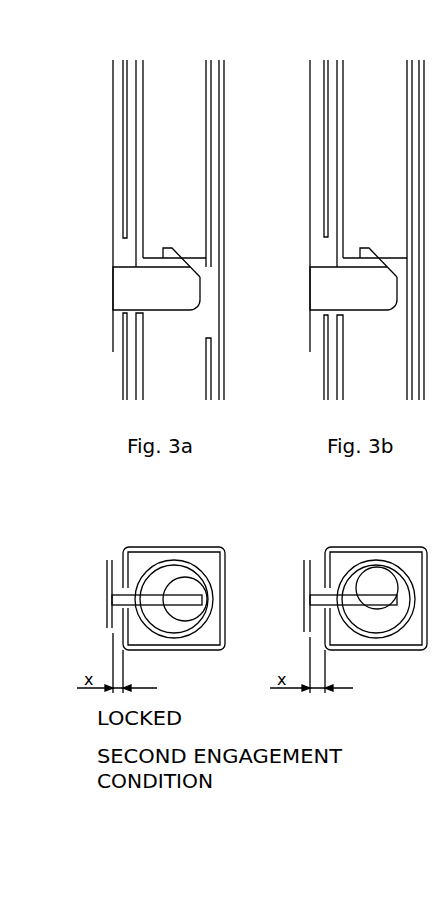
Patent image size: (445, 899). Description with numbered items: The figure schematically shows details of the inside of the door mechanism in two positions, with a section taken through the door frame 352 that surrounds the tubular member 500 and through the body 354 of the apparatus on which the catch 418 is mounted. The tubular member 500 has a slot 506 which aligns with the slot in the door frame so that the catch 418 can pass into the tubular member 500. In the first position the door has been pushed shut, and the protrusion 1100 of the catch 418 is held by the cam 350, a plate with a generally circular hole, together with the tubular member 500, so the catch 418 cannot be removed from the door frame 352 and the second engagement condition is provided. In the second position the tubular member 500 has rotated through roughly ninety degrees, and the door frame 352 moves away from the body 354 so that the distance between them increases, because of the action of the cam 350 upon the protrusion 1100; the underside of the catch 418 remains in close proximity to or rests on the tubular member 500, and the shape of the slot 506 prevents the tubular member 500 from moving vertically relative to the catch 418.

In FIG. 3A, the cam 350 is at (152, 582).
In FIG. 3B, the cam 350 is at (376, 599).
In FIG. 3A, the door frame 352 is at (123, 70).
In FIG. 3B, the door frame 352 is at (368, 355).
In FIG. 3A, the body 354 is at (76, 156).
In FIG. 3B, the body 354 is at (305, 560).
In FIG. 3A, the catch 418 is at (170, 298).
In FIG. 3B, the catch 418 is at (361, 298).
In FIG. 3A, the tubular member 500 is at (143, 74).
In FIG. 3B, the tubular member 500 is at (354, 588).
In FIG. 3A, the slot 506 is at (123, 203).
In FIG. 3B, the slot 506 is at (327, 237).
In FIG. 3A, the protrusion 1100 is at (176, 262).
In FIG. 3B, the protrusion 1100 is at (378, 262).